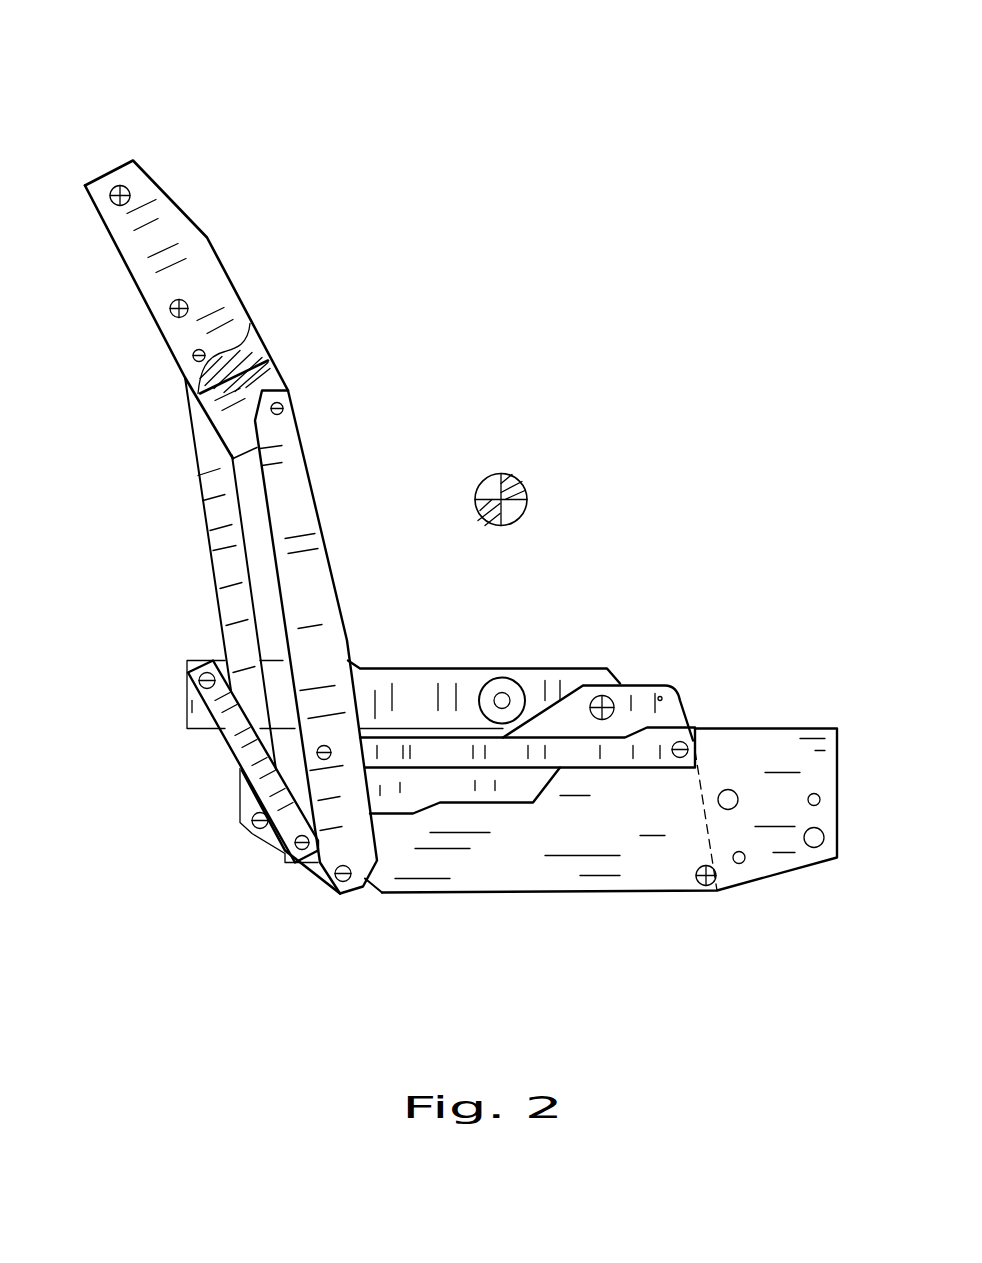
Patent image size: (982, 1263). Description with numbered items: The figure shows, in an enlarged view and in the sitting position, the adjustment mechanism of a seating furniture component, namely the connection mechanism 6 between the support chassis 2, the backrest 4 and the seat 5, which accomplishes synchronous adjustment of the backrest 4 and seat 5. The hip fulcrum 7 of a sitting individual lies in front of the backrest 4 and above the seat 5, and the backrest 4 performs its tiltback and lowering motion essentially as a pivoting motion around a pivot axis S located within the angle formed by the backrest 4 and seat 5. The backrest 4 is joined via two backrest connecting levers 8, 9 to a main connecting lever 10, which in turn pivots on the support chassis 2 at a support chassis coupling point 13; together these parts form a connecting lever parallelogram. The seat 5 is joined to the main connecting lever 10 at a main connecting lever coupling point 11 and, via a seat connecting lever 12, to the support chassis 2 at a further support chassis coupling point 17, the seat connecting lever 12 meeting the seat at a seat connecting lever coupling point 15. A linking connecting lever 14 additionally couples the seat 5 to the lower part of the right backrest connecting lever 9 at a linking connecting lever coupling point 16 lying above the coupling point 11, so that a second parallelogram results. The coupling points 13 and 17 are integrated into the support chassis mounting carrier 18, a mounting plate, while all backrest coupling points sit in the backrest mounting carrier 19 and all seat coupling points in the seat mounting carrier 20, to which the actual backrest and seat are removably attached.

The support chassis 2 is at (177, 612).
The backrest 4 is at (200, 185).
The seat 5 is at (843, 698).
The connection mechanism 6 is at (391, 600).
The hip fulcrum 7 is at (545, 462).
The backrest connecting lever 8 is at (213, 468).
The backrest connecting lever 9 is at (303, 443).
The main connecting lever 10 is at (660, 698).
The main connecting lever coupling point 11 is at (708, 882).
The seat connecting lever 12 is at (228, 740).
The support chassis coupling point 13 is at (602, 703).
The linking connecting lever 14 is at (580, 755).
The seat connecting lever coupling point 15 is at (285, 853).
The linking connecting lever coupling point 16 is at (685, 748).
The support chassis coupling point 17 is at (197, 657).
The support chassis mounting carrier 18 is at (437, 702).
The backrest mounting carrier 19 is at (208, 278).
The seat mounting carrier 20 is at (757, 855).
The pivot axis S is at (527, 493).